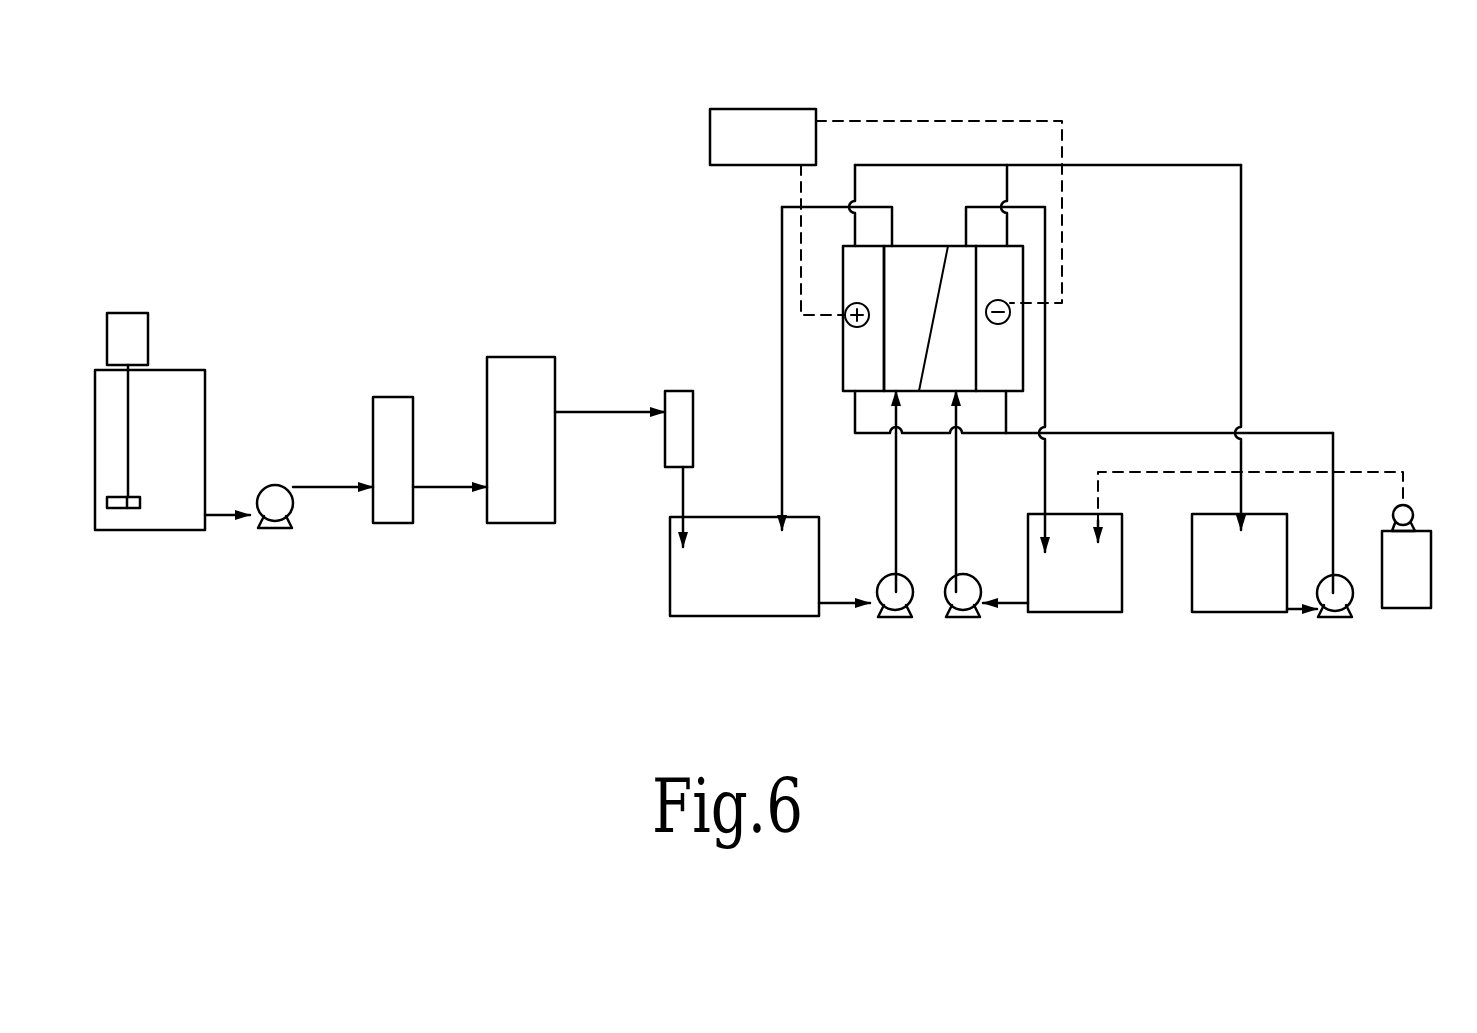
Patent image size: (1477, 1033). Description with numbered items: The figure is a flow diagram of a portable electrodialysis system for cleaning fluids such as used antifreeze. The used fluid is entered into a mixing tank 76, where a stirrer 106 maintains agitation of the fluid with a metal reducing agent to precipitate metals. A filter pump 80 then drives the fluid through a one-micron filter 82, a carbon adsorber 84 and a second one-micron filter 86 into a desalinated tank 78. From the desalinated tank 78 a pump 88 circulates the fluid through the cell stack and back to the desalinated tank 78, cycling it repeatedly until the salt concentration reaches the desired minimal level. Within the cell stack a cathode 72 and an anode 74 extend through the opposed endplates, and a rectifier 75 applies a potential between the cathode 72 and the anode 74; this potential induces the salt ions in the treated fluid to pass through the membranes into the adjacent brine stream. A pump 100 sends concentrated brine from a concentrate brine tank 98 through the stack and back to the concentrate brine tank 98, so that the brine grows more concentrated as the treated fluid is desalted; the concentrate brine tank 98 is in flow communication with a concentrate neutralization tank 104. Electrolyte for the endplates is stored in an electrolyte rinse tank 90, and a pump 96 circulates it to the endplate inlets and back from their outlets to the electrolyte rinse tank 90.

The cathode 72 is at (1013, 368).
The anode 74 is at (852, 362).
The rectifier 75 is at (740, 109).
The mixing tank 76 is at (190, 403).
The desalinated tank 78 is at (776, 598).
The filter pump 80 is at (275, 495).
The 1 micron filter 82 is at (393, 405).
The carbon adsorber 84 is at (517, 367).
The second 1 micron filter 86 is at (694, 418).
The pump 88 is at (905, 600).
The electrolyte rinse tank 90 is at (1233, 598).
The pump 96 is at (1345, 595).
The concentrate brine tank 98 is at (1092, 598).
The pump 100 is at (970, 585).
The concentrate neutralization tank 104 is at (1418, 590).
The stirrer 106 is at (148, 338).